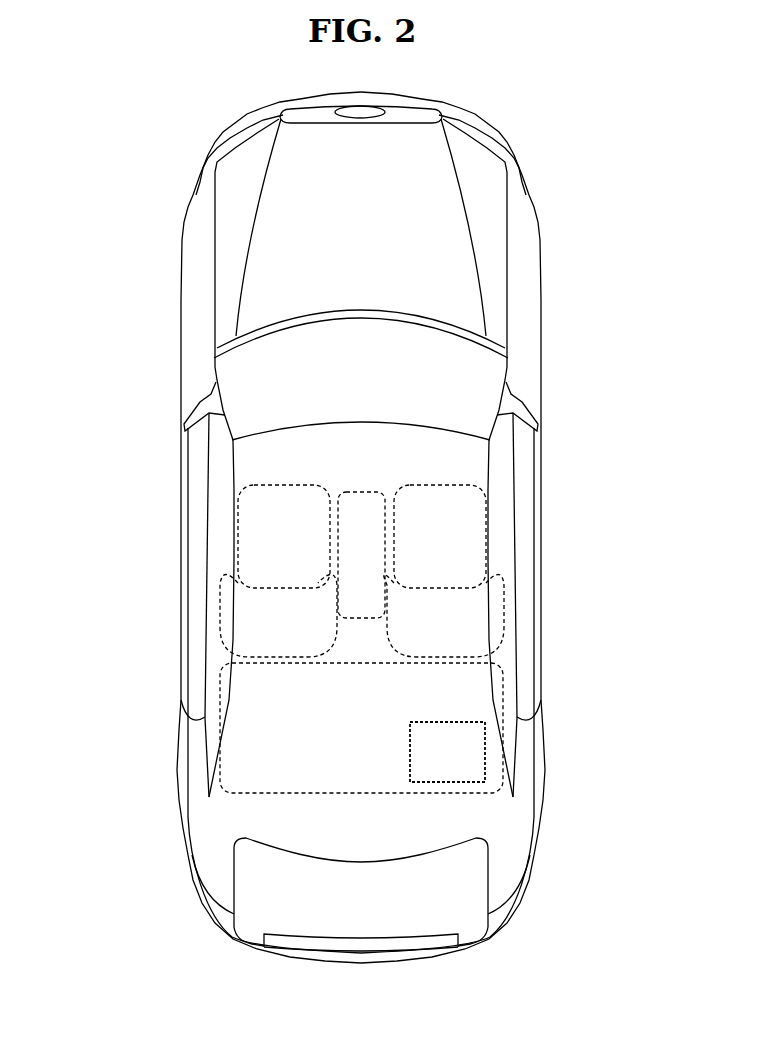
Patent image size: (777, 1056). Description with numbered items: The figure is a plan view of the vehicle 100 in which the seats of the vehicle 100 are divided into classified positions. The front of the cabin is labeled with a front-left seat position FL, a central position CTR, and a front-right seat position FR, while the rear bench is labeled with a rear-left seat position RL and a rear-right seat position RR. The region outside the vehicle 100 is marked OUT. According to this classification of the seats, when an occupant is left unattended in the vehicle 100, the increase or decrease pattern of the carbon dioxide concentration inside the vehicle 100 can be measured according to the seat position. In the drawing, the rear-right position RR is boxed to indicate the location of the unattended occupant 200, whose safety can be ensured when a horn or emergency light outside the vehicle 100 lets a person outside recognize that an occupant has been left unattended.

The vehicle 100 is at (534, 300).
The unattended occupant 200 is at (555, 752).
The front left seat FL is at (278, 571).
The front right seat FR is at (444, 571).
The center console CTR is at (364, 555).
The rear left seat RL is at (361, 728).
The rear right seat RR is at (485, 750).
The outside of vehicle OUT is at (69, 546).